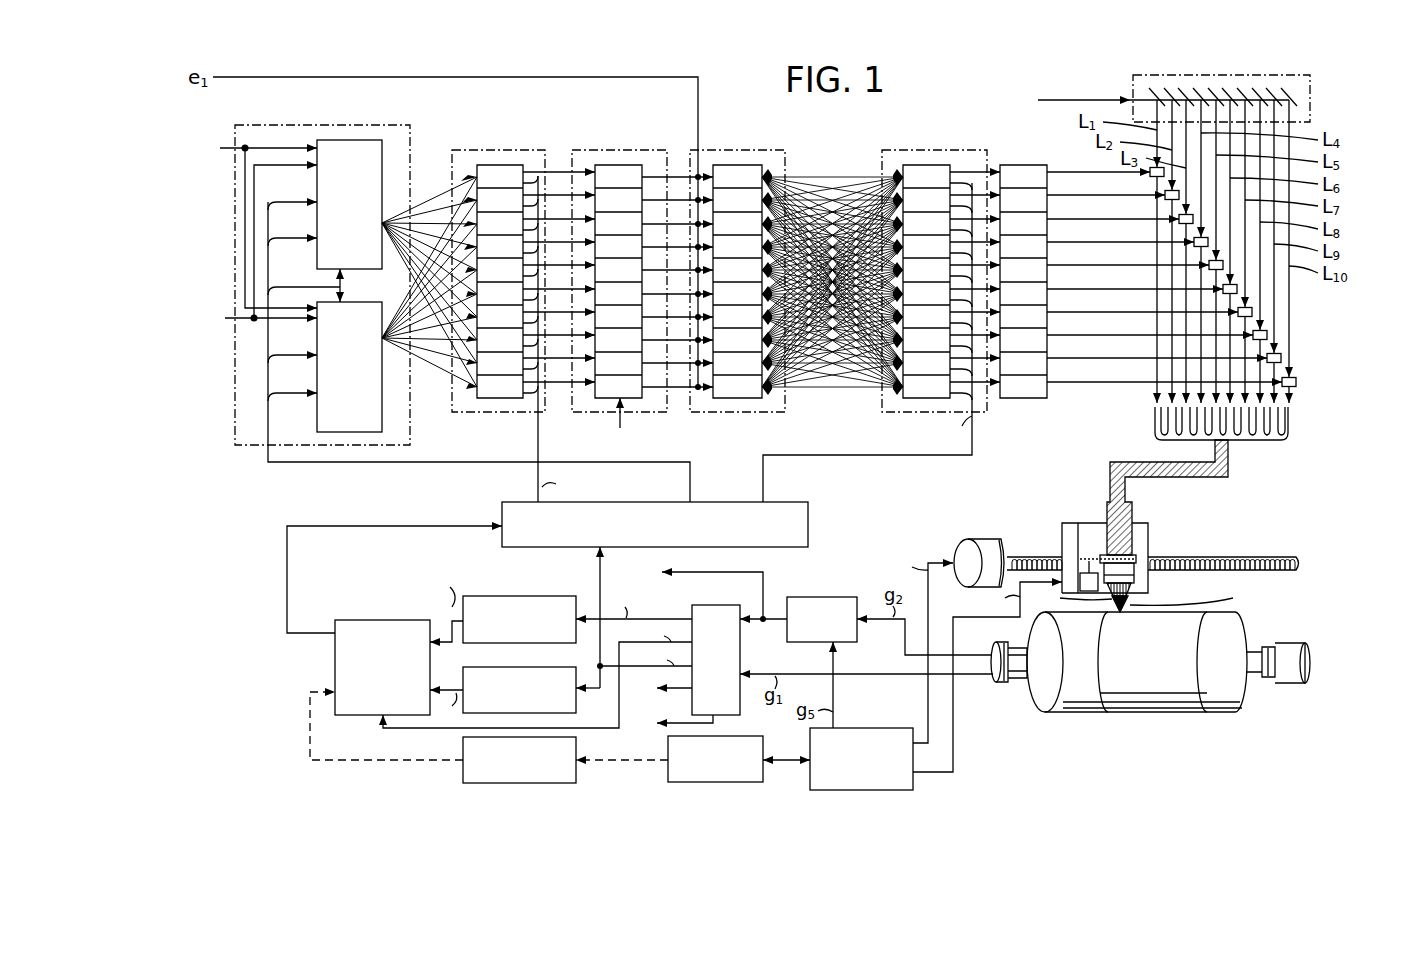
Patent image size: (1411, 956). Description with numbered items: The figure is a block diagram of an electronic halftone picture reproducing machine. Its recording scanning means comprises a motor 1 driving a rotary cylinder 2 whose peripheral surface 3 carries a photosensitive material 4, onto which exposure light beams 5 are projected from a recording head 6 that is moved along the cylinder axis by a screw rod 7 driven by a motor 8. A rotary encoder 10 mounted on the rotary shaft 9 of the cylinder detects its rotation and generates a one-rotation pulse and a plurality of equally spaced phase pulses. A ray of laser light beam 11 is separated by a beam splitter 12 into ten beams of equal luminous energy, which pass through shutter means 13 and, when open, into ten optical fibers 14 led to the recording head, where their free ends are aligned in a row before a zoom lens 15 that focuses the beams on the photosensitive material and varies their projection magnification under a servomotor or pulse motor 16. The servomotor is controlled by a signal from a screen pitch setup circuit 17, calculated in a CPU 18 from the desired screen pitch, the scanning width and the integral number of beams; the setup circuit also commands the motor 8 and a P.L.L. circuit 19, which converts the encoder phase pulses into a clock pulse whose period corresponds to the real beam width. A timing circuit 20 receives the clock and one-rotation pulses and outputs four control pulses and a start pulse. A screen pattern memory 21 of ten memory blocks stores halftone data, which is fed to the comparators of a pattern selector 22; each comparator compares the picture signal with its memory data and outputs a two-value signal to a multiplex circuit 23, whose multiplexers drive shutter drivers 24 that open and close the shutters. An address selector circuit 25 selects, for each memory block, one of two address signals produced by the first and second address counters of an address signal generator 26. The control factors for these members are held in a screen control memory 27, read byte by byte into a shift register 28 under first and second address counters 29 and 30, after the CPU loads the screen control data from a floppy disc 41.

The motor 1 is at (1298, 683).
The rotary cylinder 2 is at (1046, 712).
The peripheral surface 3 is at (1112, 706).
The photosensitive material 4 is at (1190, 690).
The exposure light beam 5 is at (1136, 603).
The recording head 6 is at (1150, 524).
The screw rod 7 is at (1245, 557).
The motor 8 is at (1000, 543).
The rotary shaft 9 is at (1026, 680).
The rotary encoder 10 is at (1000, 683).
The laser light beam 11 is at (1078, 100).
The beam splitter 12 is at (1310, 86).
The shutter means 13 is at (1152, 177).
The optical fibers 14 is at (1155, 418).
The zoom lens 15 is at (1136, 572).
The servomotor or pulse motor 16 is at (1086, 572).
The screen pitch setup circuit 17 is at (913, 786).
The CPU 18 is at (752, 782).
The P.L.L. circuit 19 is at (826, 597).
The timing circuit 20 is at (713, 606).
The screen pattern memory 21 is at (616, 150).
The pattern selector 22 is at (737, 150).
The multiplex circuit 23 is at (921, 150).
The shutter drivers 24 is at (1023, 281).
The address selector circuit 25 is at (502, 150).
The address signal generator 26 is at (382, 112).
The screen control memory 27 is at (383, 619).
The shift register 28 is at (810, 525).
The first address counter 29 is at (548, 596).
The second address counter 30 is at (463, 681).
The floppy disc 41 is at (565, 783).